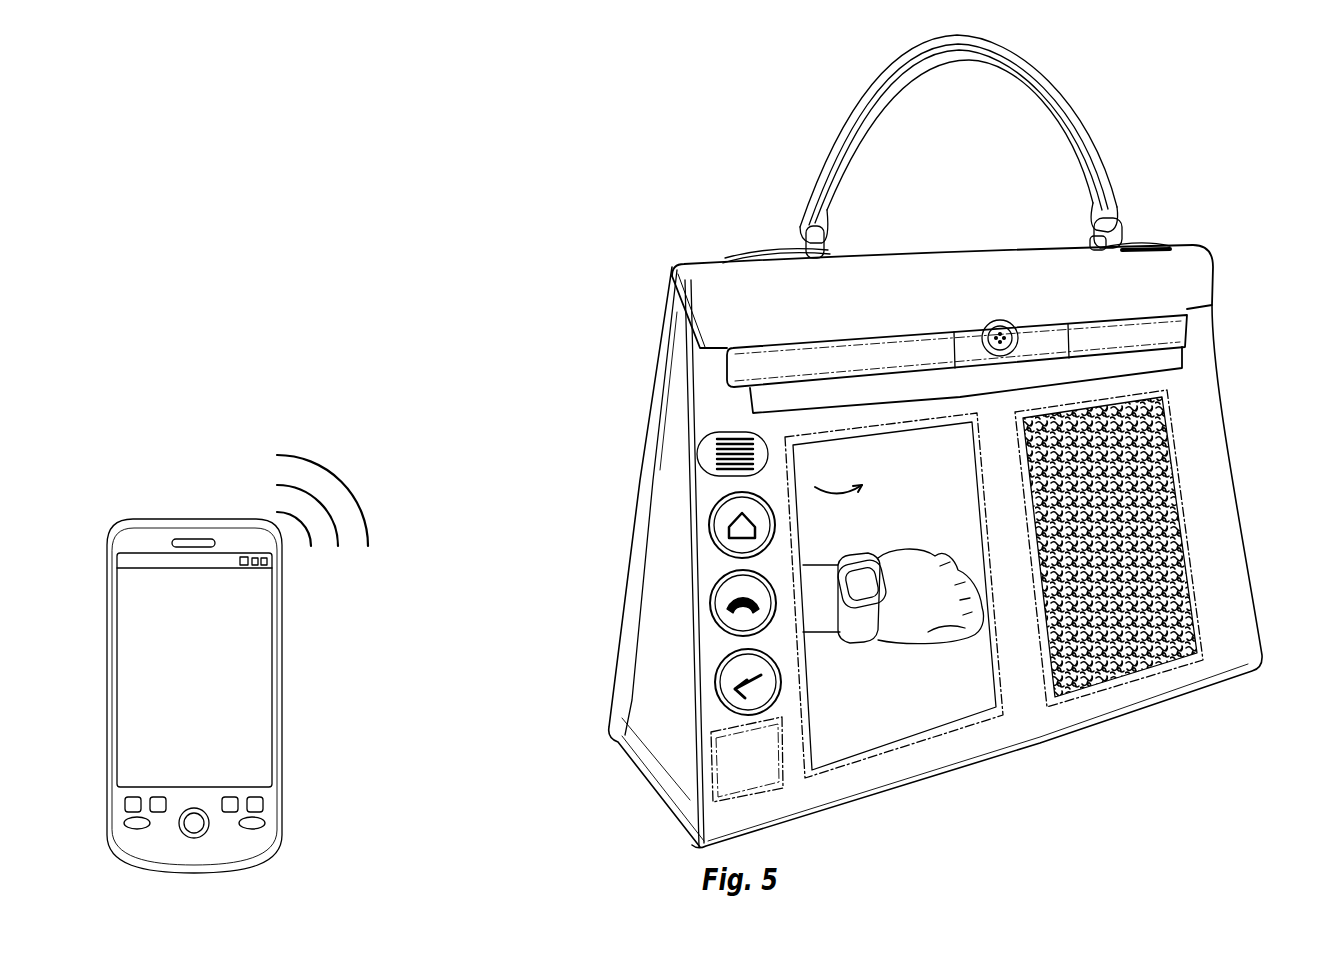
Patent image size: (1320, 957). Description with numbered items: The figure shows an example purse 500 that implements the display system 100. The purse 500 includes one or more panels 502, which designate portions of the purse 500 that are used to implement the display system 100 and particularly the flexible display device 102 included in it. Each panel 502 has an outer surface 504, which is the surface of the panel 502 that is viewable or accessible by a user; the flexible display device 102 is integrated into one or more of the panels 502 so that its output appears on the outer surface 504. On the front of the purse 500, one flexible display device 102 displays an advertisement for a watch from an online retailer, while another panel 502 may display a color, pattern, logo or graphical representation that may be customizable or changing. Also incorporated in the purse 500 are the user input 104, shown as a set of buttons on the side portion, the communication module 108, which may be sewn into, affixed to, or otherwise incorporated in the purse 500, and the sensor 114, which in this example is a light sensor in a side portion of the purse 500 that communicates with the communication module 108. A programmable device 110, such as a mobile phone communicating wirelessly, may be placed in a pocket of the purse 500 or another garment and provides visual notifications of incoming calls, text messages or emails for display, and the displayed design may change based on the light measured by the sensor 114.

The purse 500 is at (245, 142).
The display system 100 is at (625, 336).
The flexible display device 102 is at (985, 702).
The user input 104 is at (718, 670).
The communication module 108 is at (703, 745).
The programmable device 110 is at (237, 519).
The sensor 114 is at (698, 460).
The panel 502 is at (1197, 588).
The outer surface 504 is at (1183, 543).